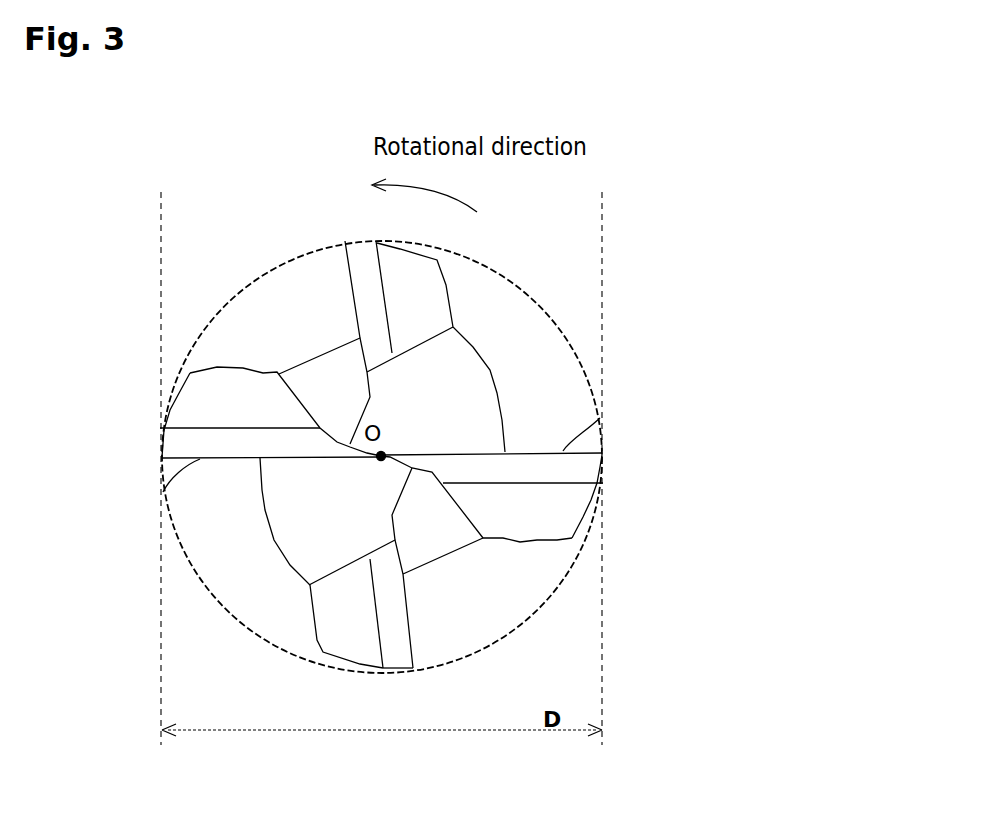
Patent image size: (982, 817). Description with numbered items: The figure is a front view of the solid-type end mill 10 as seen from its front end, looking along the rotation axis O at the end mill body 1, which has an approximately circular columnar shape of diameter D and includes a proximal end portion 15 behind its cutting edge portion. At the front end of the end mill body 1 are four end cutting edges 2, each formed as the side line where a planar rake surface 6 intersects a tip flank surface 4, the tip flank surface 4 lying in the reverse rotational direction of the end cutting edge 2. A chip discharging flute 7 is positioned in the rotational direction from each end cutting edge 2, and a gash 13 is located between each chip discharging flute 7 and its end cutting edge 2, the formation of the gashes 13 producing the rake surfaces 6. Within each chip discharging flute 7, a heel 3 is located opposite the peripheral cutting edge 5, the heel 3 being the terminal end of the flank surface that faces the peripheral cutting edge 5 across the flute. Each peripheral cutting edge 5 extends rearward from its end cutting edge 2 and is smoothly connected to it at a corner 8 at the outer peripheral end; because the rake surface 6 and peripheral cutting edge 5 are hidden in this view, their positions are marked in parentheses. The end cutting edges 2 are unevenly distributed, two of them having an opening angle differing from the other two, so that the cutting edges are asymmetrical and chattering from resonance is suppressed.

The end mill body 1 is at (162, 338).
The end cutting edge 2 is at (330, 245).
The heel 3 is at (160, 428).
The tip flank surface 4 is at (367, 262).
The peripheral cutting edge 5 is at (655, 433).
The rake surface 6 is at (598, 405).
The chip discharging flute 7 is at (483, 347).
The corner 8 is at (603, 450).
The end mill 10 is at (381, 468).
The gash 13 is at (250, 330).
The proximal end portion 15 is at (203, 263).